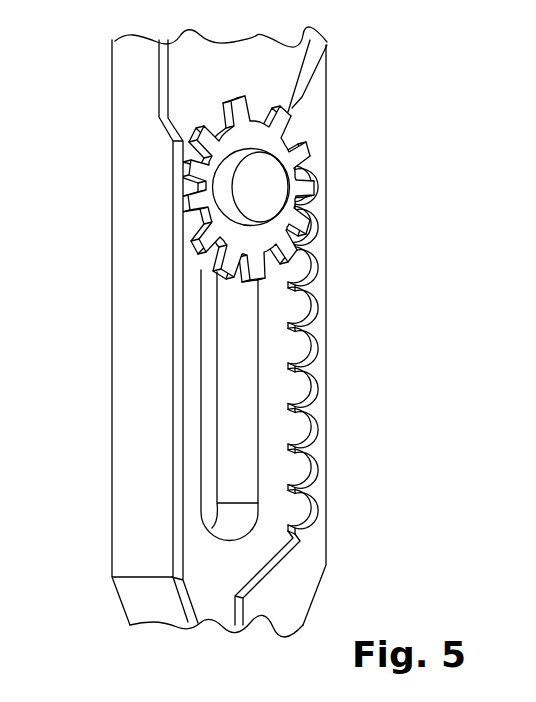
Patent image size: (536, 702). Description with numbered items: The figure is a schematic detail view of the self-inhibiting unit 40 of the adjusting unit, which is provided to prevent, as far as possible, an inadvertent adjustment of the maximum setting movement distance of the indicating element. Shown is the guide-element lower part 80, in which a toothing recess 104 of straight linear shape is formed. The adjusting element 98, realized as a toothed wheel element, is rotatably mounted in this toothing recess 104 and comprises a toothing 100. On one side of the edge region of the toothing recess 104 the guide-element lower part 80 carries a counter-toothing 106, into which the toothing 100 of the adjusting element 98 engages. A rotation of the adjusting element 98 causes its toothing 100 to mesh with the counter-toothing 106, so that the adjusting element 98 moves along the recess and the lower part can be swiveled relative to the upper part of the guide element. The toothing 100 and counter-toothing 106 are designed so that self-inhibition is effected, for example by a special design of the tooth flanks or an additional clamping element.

The self-inhibiting unit 40 is at (357, 240).
The guide-element lower part 80 is at (128, 220).
The adjusting element 98 is at (270, 192).
The toothing 100 is at (276, 92).
The toothing recess 104 is at (238, 408).
The counter-toothing 106 is at (311, 471).